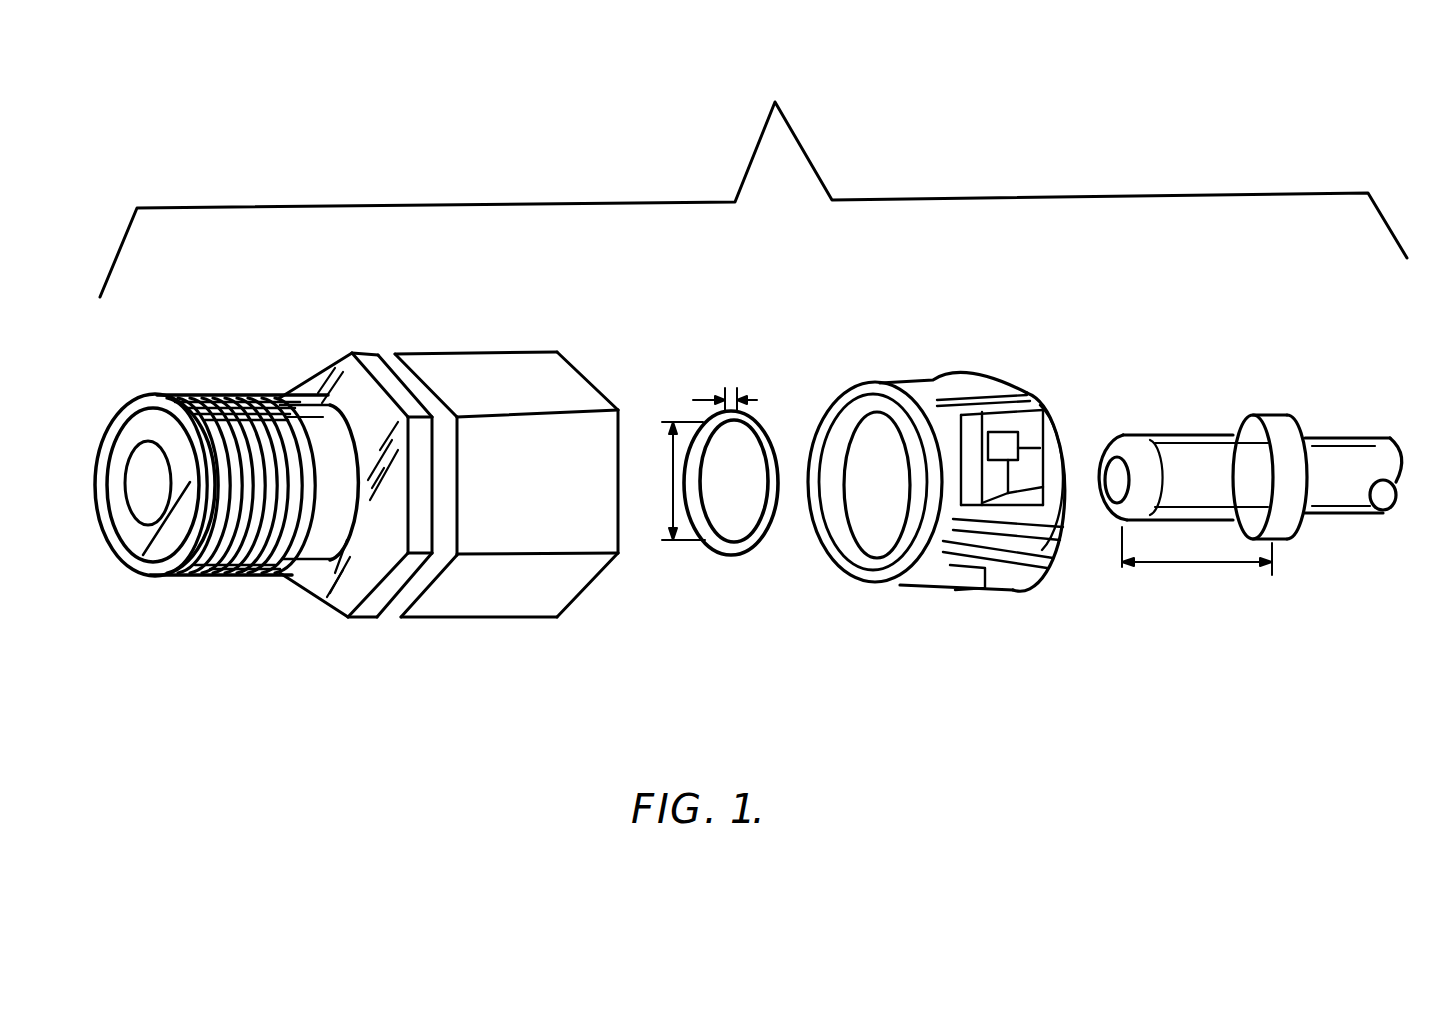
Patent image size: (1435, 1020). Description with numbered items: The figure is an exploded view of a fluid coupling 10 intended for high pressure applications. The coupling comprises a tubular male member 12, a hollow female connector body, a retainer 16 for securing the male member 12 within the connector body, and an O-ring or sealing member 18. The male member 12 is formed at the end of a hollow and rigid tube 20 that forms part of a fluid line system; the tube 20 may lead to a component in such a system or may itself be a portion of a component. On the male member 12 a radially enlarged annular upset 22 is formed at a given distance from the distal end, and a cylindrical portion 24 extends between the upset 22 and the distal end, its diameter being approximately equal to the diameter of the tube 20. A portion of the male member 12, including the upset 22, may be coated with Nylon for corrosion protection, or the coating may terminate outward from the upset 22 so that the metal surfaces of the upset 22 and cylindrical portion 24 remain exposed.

The fluid coupling 10 is at (753, 173).
The tubular male member 12 is at (455, 617).
The retainer 16 is at (917, 582).
The O-ring or sealing member 18 is at (731, 556).
The tube 20 is at (1347, 517).
The annular upset 22 is at (1272, 417).
The cylindrical portion 24 is at (1182, 450).